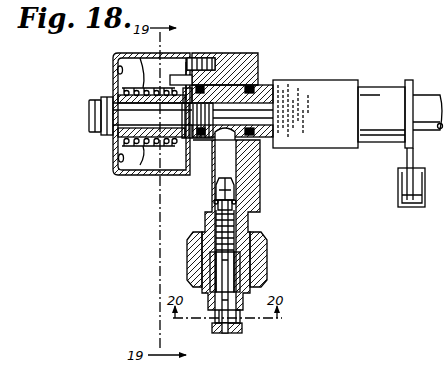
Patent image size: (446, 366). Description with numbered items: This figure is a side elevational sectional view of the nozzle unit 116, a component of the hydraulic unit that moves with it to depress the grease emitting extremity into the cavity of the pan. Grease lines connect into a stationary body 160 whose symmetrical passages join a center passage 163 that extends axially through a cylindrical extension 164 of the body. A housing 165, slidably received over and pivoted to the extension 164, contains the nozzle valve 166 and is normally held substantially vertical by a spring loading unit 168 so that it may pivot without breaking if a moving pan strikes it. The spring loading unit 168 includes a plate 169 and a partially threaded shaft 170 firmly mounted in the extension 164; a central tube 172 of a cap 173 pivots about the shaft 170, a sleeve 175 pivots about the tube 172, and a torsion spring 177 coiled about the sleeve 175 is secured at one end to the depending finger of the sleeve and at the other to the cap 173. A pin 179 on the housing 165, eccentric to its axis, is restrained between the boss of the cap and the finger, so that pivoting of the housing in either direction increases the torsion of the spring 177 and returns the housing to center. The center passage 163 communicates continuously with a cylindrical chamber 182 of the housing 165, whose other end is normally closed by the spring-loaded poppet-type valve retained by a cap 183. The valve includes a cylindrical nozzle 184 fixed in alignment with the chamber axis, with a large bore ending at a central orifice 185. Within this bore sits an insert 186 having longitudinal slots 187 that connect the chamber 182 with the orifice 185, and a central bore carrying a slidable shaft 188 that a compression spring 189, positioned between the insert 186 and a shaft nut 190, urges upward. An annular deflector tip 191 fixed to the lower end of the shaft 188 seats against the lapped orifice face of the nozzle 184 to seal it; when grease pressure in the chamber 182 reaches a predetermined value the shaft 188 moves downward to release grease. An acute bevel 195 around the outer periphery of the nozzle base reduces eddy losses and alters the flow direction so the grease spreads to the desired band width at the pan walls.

The nozzle unit 116 is at (328, 53).
The stationary body 160 is at (340, 148).
The center passage 163 is at (259, 100).
The cylindrical extension 164 is at (258, 53).
The housing 165 is at (238, 52).
The nozzle valve 166 is at (318, 228).
The spring loading unit 168 is at (88, 123).
The plate 169 is at (178, 160).
The partially threaded shaft 170 is at (118, 136).
The central tube 172 is at (114, 90).
The cap 173 is at (113, 62).
The sleeve 175 is at (132, 53).
The torsion spring 177 is at (125, 176).
The pin 179 is at (187, 53).
The cylindrical chamber 182 is at (232, 157).
The cap 183 is at (270, 252).
The cylindrical nozzle 184 is at (247, 288).
The central orifice 185 is at (217, 313).
The insert 186 is at (213, 263).
The longitudinal slots 187 is at (268, 268).
The shaft 188 is at (236, 212).
The compression spring 189 is at (233, 205).
The shaft nut 190 is at (220, 192).
The annular deflector tip 191 is at (237, 333).
The acute bevel 195 is at (281, 307).